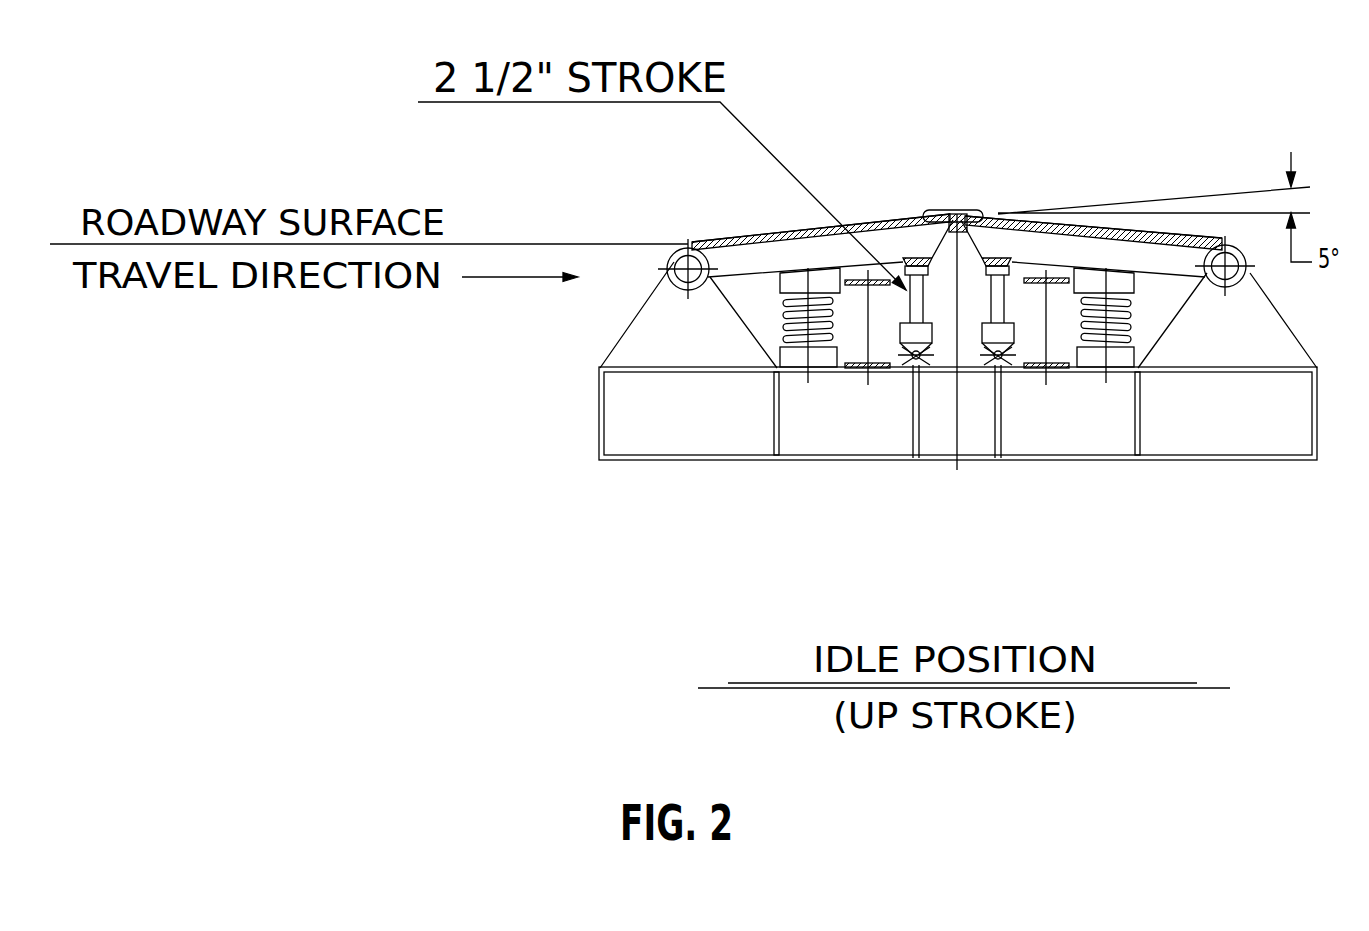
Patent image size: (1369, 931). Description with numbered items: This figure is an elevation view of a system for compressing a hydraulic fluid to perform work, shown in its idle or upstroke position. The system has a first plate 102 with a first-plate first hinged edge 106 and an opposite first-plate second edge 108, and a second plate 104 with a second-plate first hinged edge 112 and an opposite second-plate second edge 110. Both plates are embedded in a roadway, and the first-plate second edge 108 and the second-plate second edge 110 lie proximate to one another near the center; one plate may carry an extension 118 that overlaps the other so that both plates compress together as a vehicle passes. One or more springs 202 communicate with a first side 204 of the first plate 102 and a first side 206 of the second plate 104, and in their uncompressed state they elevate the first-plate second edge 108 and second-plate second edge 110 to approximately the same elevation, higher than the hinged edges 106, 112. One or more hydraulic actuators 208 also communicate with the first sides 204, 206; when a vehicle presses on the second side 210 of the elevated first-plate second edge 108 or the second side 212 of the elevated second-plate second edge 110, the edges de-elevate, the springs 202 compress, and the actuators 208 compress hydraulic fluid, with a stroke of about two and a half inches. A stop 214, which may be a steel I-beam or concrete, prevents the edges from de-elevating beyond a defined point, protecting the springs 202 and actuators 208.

The first plate 102 is at (862, 226).
The second plate 104 is at (1100, 233).
The first-plate first hinged edge 106 is at (676, 252).
The first-plate second edge 108 is at (960, 216).
The second-plate second edge 110 is at (955, 220).
The second-plate first hinged edge 112 is at (1228, 246).
The extension 118 is at (942, 212).
The springs 202 is at (770, 325).
The first side of the first plate 204 is at (745, 296).
The first side of the second plate 206 is at (1184, 294).
The hydraulic actuators 208 is at (905, 357).
The second side of the first-plate second edge 210 is at (772, 222).
The second side of the second-plate second edge 212 is at (1079, 210).
The stop 214 is at (832, 370).